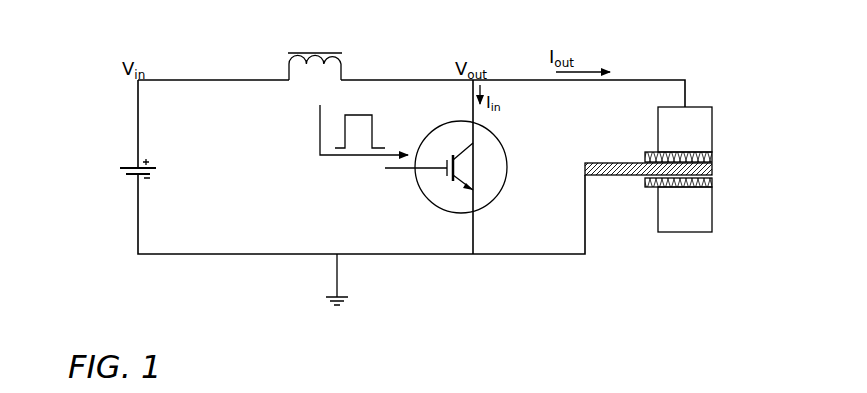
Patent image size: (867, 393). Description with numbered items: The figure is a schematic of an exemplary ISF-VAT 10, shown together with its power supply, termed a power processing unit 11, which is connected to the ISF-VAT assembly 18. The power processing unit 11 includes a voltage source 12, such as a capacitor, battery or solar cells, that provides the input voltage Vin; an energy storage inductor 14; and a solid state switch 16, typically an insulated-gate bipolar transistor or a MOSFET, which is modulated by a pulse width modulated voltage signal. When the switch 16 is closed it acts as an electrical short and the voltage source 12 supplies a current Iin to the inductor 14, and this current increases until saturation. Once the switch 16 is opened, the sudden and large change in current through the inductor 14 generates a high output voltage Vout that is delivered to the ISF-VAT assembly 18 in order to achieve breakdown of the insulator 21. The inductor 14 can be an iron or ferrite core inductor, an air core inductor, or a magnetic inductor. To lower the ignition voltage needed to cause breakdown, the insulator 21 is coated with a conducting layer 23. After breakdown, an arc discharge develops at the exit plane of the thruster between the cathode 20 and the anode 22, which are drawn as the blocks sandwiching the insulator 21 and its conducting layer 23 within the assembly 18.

The ISF-VAT 10 is at (633, 274).
The power processing unit 11 is at (162, 275).
The voltage source 12 is at (120, 168).
The energy storage inductor 14 is at (303, 52).
The solid state switch 16 is at (428, 193).
The ISF-VAT assembly 18 is at (695, 139).
The cathode 20 is at (712, 170).
The insulator 21 is at (712, 187).
The anode 22 is at (712, 125).
The conducting layer 23 is at (712, 157).